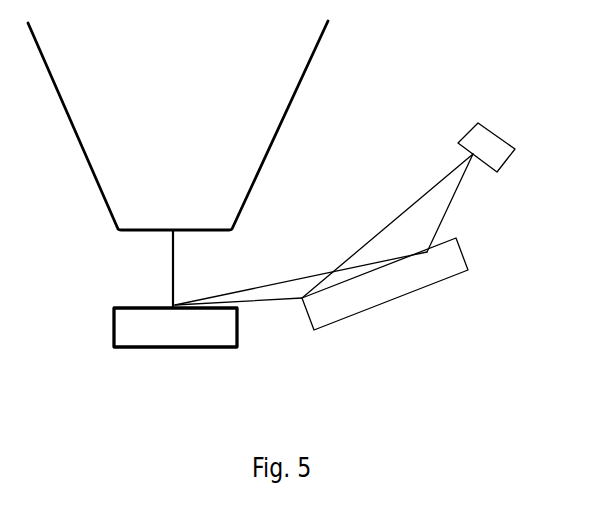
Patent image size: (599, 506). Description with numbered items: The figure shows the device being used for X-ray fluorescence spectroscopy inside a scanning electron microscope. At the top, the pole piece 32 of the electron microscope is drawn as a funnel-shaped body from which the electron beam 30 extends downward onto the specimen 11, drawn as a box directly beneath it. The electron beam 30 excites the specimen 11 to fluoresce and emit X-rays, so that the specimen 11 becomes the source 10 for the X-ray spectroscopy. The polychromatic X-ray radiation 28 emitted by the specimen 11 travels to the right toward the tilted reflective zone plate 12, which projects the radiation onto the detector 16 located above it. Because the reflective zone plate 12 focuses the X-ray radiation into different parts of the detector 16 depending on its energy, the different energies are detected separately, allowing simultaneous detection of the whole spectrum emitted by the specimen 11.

The pole piece 32 is at (178, 125).
The electron beam 30 is at (157, 268).
The source 10 is at (174, 354).
The specimen 11 is at (174, 354).
The polychromatic X-ray radiation 28 is at (270, 291).
The reflective zone plate 12 is at (385, 295).
The detector 16 is at (427, 194).